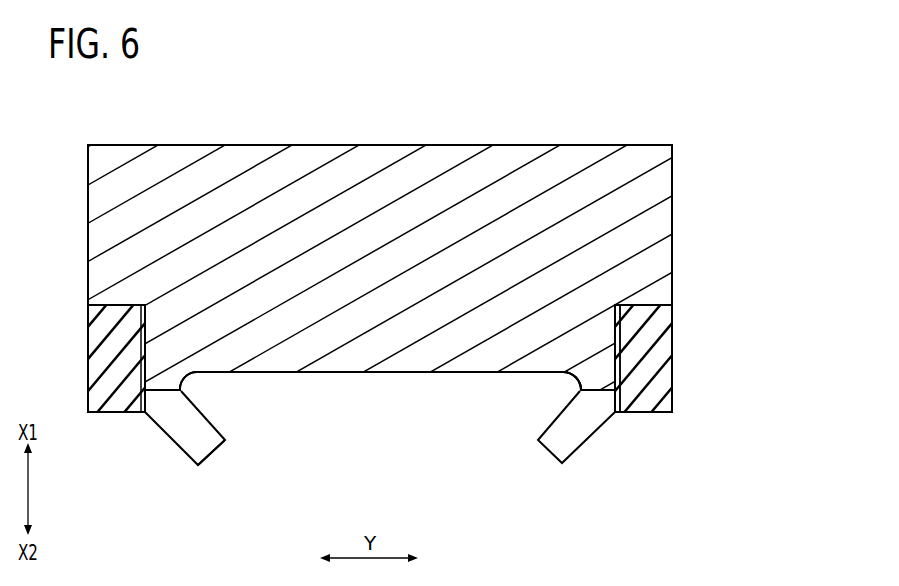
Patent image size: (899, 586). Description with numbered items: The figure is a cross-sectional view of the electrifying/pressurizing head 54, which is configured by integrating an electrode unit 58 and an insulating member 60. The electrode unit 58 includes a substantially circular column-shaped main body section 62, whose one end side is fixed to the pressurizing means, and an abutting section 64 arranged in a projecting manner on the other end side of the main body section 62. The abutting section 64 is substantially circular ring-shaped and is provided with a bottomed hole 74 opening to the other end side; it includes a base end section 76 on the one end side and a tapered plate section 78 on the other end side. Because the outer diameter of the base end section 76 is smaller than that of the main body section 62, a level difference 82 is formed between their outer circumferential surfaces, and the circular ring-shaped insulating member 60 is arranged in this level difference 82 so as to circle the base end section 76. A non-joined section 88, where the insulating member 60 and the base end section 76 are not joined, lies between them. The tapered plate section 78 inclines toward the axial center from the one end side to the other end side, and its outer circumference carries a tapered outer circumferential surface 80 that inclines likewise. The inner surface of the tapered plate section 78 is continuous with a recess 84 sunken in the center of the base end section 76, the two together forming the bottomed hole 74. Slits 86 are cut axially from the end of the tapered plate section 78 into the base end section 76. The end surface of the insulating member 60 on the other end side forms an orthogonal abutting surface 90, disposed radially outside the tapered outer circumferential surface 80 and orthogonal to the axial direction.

The electrifying/pressurizing head 54 is at (650, 80).
The electrode unit 58 is at (680, 174).
The main body section 62 is at (673, 212).
The base end section 76 is at (141, 331).
The orthogonal abutting surface 90 is at (120, 414).
The insulating member 60 is at (663, 356).
The level difference 82 is at (645, 306).
The non-joined section 88 is at (620, 370).
The bottomed hole 74 is at (338, 374).
The abutting section 64 is at (419, 416).
The recess 84 is at (573, 375).
The tapered outer circumferential surface 80 is at (182, 451).
The tapered plate section 78 is at (208, 443).
The slits 86 is at (587, 428).